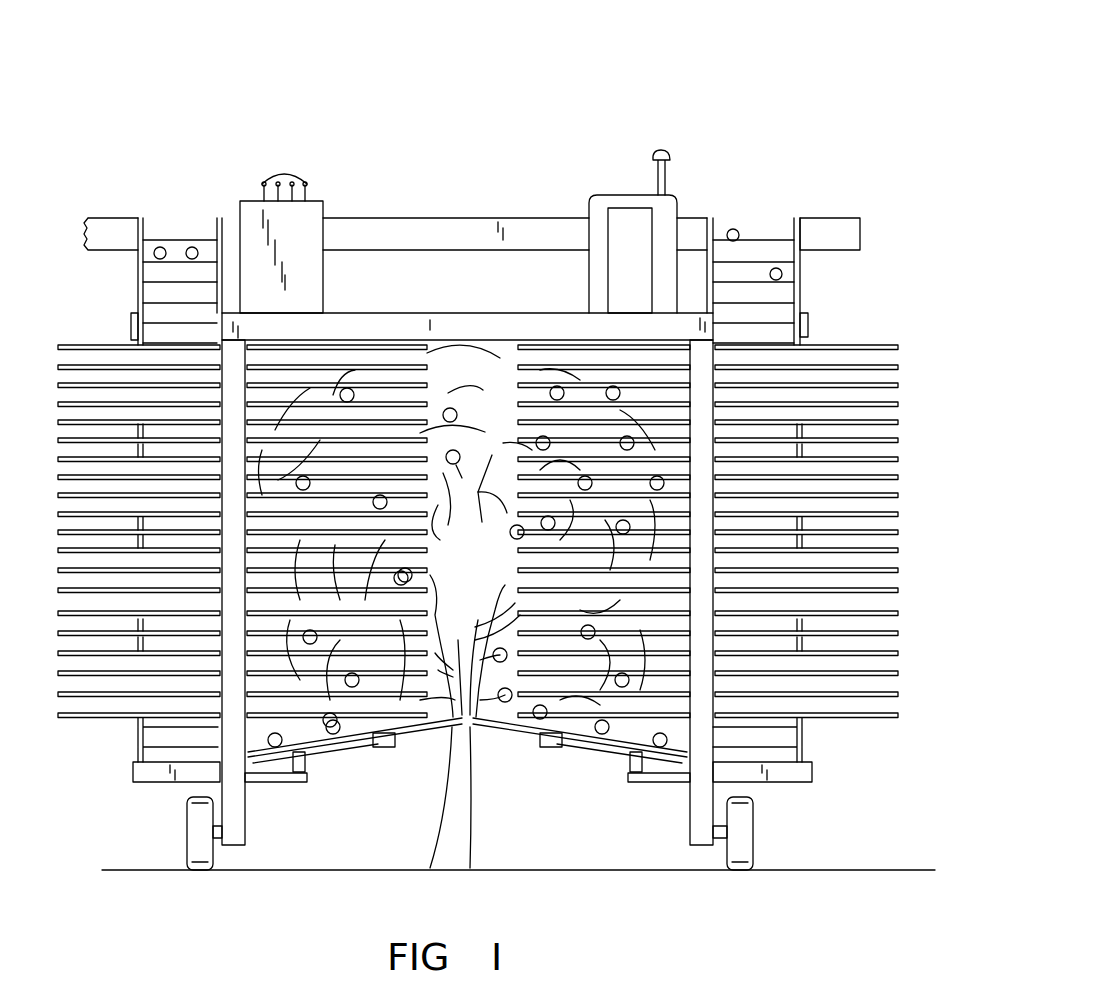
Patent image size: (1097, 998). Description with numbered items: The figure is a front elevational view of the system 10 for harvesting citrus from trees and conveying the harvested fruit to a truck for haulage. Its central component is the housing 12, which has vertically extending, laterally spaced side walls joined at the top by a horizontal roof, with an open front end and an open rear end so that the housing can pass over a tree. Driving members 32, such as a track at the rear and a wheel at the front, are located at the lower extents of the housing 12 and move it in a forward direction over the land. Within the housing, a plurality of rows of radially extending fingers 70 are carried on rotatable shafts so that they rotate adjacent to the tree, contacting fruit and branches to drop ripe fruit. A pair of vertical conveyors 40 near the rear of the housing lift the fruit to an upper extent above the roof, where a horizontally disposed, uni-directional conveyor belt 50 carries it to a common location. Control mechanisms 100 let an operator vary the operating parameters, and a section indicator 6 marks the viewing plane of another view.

The system for harvesting citrus 10 is at (632, 100).
The housing 12 is at (230, 328).
The driving members 32 is at (208, 877).
The vertical conveyors 40 is at (758, 237).
The uni-directional conveyor belt 50 is at (485, 218).
The fingers 70 is at (862, 345).
The control mechanisms 100 is at (328, 188).
The section line 6 is at (276, 683).